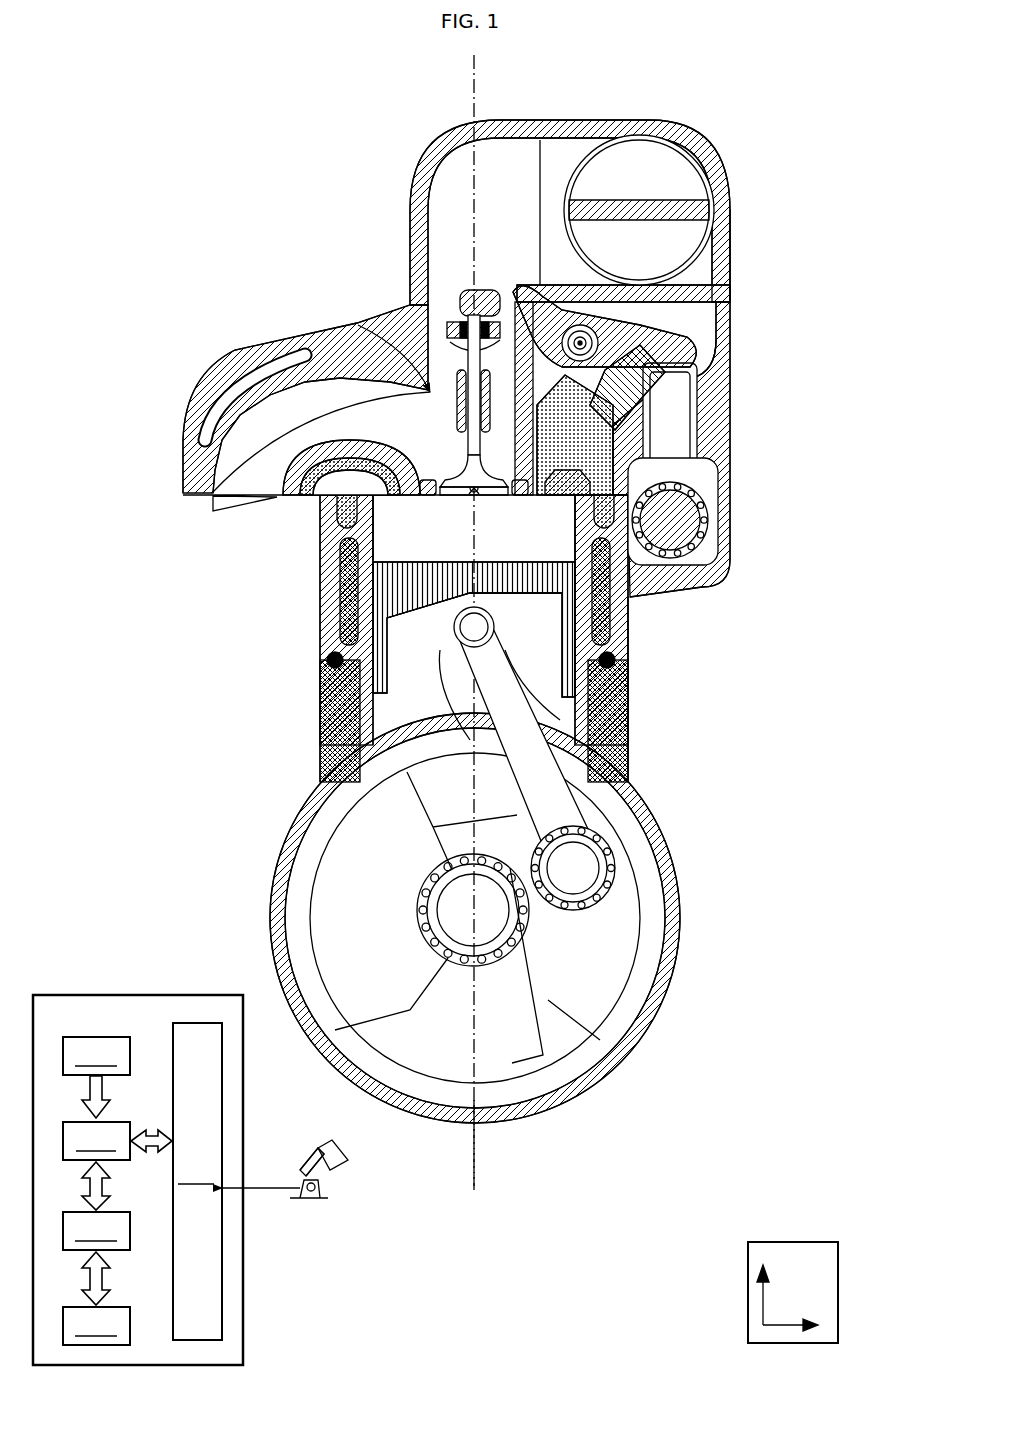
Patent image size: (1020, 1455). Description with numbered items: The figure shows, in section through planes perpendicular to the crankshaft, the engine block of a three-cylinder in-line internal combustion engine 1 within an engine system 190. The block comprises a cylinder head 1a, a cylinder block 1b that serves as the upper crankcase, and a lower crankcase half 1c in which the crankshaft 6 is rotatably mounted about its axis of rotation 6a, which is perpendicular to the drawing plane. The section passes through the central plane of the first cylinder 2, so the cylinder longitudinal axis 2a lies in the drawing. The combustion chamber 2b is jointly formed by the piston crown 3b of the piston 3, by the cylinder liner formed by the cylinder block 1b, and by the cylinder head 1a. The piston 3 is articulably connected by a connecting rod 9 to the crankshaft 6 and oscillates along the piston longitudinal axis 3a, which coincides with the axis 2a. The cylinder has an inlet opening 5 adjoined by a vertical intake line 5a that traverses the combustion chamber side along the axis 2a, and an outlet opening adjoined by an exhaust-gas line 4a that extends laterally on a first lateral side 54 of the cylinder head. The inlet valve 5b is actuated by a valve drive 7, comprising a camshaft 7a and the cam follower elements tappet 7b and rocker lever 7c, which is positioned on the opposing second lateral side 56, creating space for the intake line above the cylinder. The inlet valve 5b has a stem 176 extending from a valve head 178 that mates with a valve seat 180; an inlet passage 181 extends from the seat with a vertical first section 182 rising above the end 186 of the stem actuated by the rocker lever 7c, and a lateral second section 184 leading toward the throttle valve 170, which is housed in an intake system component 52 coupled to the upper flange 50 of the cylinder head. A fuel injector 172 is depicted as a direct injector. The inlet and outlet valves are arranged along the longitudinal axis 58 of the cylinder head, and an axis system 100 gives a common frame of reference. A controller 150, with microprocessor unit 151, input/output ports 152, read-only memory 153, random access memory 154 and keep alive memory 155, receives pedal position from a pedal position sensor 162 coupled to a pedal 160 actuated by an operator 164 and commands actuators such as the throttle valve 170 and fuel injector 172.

The internal combustion engine 1 is at (805, 270).
The cylinder head 1a is at (732, 395).
The cylinder block 1b is at (630, 628).
The lower crankcase half 1c is at (675, 905).
The cylinder 2 is at (310, 648).
The cylinder longitudinal axis 2a is at (476, 90).
The combustion chamber 2b is at (440, 533).
The piston 3 is at (632, 600).
The piston longitudinal axis 3a is at (476, 1140).
The piston crown 3b is at (528, 560).
The exhaust-gas line 4a is at (289, 441).
The inlet opening 5 is at (435, 470).
The intake line 5a is at (410, 305).
The inlet valve 5b is at (420, 330).
The crankshaft 6 is at (600, 1040).
The axis of rotation of the crankshaft 6a is at (405, 985).
The valve drive 7 is at (785, 345).
The camshaft 7a is at (700, 540).
The tappet 7b is at (698, 435).
The rocker lever 7c is at (712, 340).
The connecting rod 9 is at (628, 745).
The upper flange 50 is at (418, 272).
The intake system component 52 is at (418, 222).
The first lateral side 54 is at (155, 388).
The second lateral side 56 is at (870, 375).
The longitudinal axis of the cylinder head 58 is at (474, 494).
The axis system 100 is at (748, 1290).
The controller 150 is at (40, 997).
The microprocessor unit 151 is at (118, 1121).
The input/output ports 152 is at (172, 1053).
The read-only memory 153 is at (68, 1036).
The random access memory 154 is at (118, 1211).
The keep alive memory 155 is at (118, 1306).
The pedal 160 is at (295, 1168).
The pedal position sensor 162 is at (322, 1190).
The operator 164 is at (345, 1152).
The throttle valve 170 is at (656, 181).
The fuel injector 172 is at (565, 480).
The stem 176 is at (478, 395).
The valve head 178 is at (445, 478).
The valve seat 180 is at (440, 490).
The inlet passage 181 is at (369, 347).
The first section 182 is at (445, 315).
The second section 184 is at (580, 163).
The end of the valve stem 186 is at (485, 312).
The engine system 190 is at (128, 170).